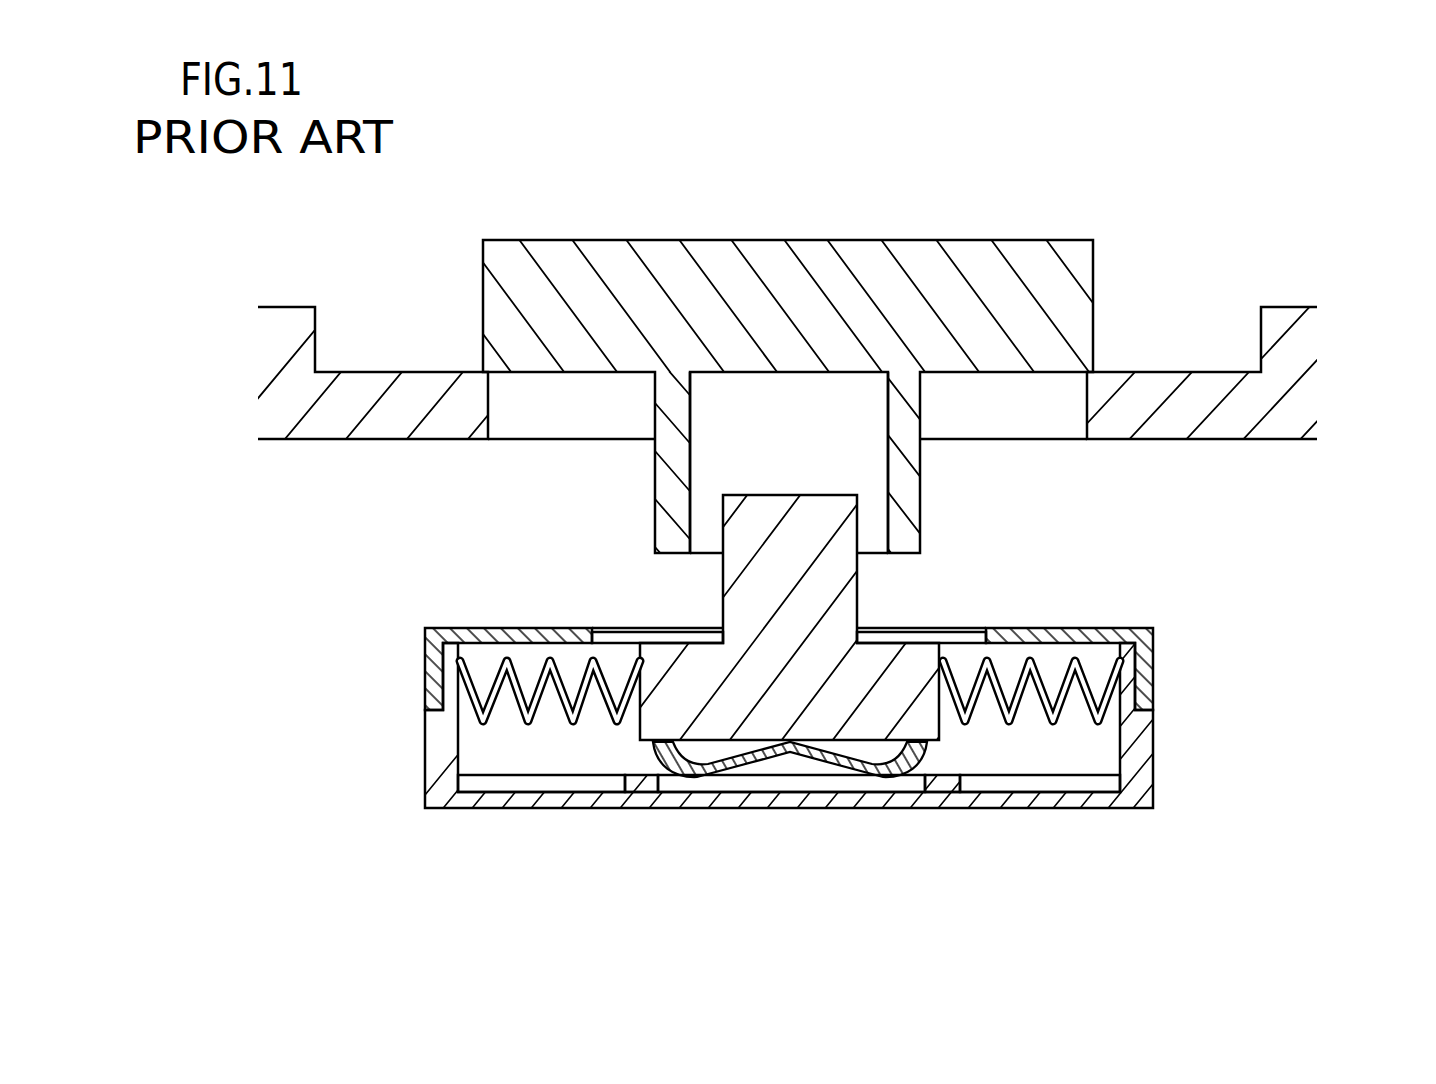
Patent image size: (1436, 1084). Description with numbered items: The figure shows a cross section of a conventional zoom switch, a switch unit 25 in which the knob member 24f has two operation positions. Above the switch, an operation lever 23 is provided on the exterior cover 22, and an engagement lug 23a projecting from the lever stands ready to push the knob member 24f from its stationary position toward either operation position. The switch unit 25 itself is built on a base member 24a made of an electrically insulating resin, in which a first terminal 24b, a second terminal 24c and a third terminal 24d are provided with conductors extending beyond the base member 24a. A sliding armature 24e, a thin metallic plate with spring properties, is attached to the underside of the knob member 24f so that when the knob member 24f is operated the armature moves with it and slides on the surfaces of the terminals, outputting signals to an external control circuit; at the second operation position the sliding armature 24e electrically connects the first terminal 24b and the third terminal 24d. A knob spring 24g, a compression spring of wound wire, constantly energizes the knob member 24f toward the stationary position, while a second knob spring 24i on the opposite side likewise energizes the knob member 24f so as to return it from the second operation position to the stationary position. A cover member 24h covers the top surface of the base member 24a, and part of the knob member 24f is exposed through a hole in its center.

The exterior cover 22 is at (1298, 376).
The operation lever 23 is at (860, 255).
The engagement lug 23a is at (888, 427).
The base member 24a is at (1153, 745).
The first terminal 24b is at (778, 783).
The second terminal 24c is at (578, 782).
The third terminal 24d is at (1063, 782).
The sliding armature 24e is at (858, 763).
The knob member 24f is at (850, 580).
The knob spring 24g is at (524, 718).
The cover member 24h is at (438, 679).
The knob spring 24i is at (1107, 706).
The switch unit 25 is at (416, 623).